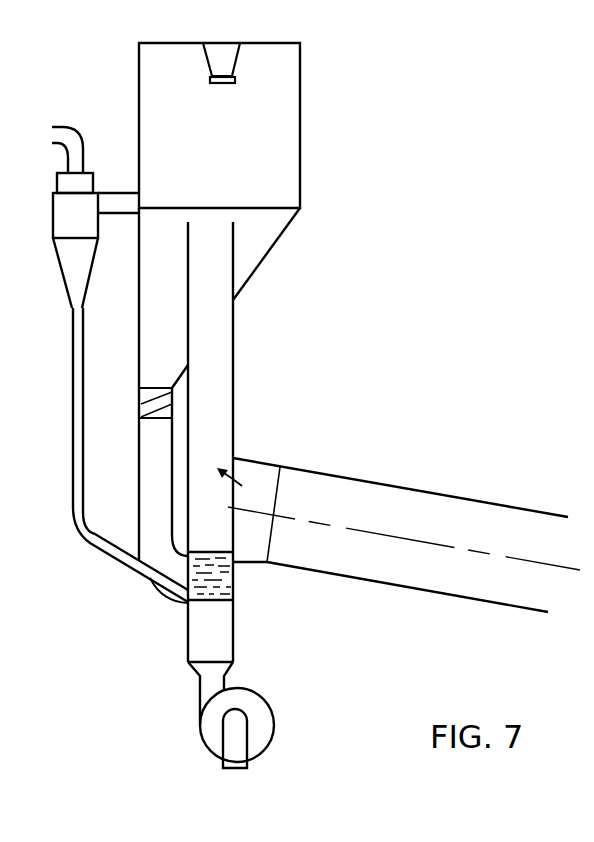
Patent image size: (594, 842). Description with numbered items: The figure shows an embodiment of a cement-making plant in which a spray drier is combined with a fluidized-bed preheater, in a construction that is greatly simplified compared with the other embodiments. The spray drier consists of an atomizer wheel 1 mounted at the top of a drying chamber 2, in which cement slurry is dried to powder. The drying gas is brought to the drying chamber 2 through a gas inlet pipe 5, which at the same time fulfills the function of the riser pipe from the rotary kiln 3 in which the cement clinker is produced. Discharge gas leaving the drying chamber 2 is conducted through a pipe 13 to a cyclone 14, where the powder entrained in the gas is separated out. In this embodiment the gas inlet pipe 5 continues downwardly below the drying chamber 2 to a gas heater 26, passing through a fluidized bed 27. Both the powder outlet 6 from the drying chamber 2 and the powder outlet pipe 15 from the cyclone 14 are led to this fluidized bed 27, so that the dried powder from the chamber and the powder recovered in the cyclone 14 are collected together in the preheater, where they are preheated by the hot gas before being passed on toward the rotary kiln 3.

The atomizer wheel 1 is at (231, 51).
The drying chamber 2 is at (289, 148).
The rotary kiln 3 is at (432, 498).
The gas inlet pipe 5 is at (228, 436).
The powder outlet 6 is at (146, 413).
The pipe 13 is at (134, 193).
The cyclone 14 is at (61, 213).
The powder outlet pipe 15 is at (80, 430).
The gas heater 26 is at (229, 634).
The fluidized bed 27 is at (235, 585).